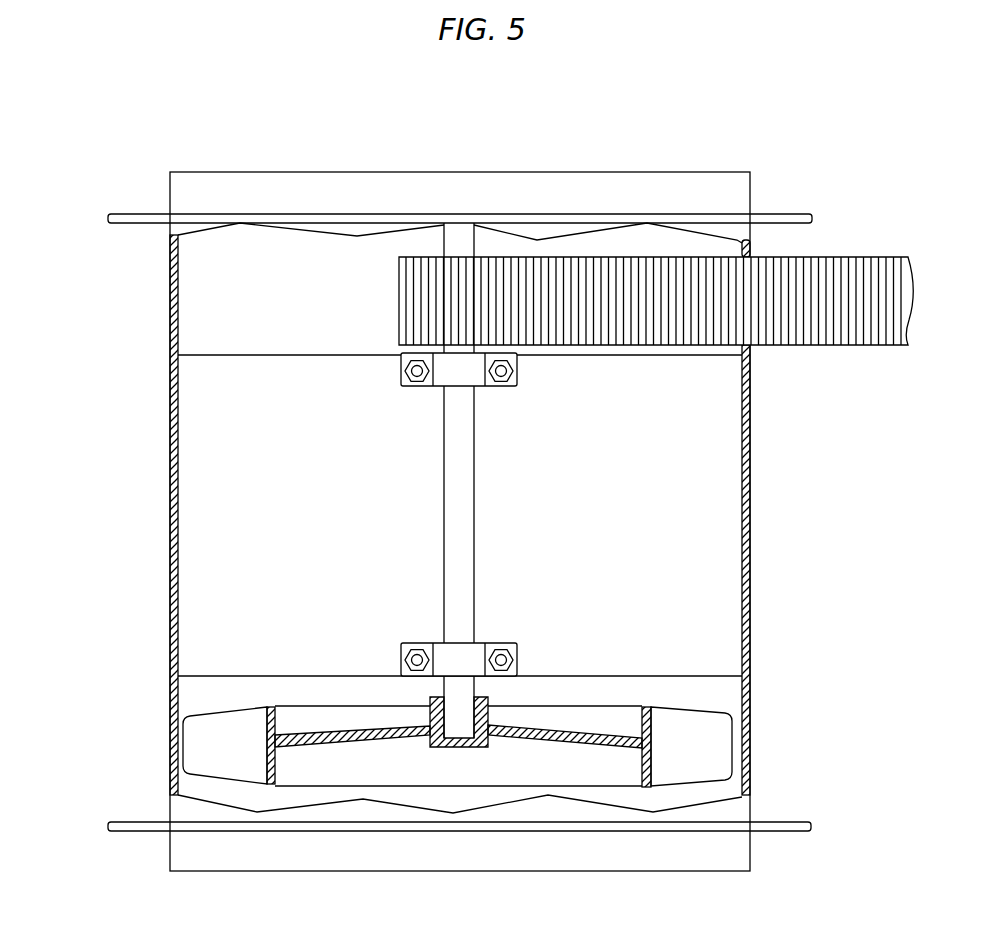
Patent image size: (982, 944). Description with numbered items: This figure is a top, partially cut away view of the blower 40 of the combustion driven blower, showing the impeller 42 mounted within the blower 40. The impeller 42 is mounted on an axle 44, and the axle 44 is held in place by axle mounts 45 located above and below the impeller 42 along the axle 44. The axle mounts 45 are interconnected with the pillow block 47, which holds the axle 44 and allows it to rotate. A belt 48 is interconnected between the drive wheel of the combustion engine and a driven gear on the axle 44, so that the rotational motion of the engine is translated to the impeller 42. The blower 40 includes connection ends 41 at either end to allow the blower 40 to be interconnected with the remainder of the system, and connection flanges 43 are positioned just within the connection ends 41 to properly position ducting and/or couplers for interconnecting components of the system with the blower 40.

The blower 40 is at (125, 516).
The connection ends 41 is at (751, 186).
The impeller 42 is at (715, 712).
The connection flanges 43 is at (812, 219).
The axle 44 is at (475, 530).
The axle mounts 45 is at (498, 388).
The pillow block 47 is at (722, 552).
The belt 48 is at (860, 258).